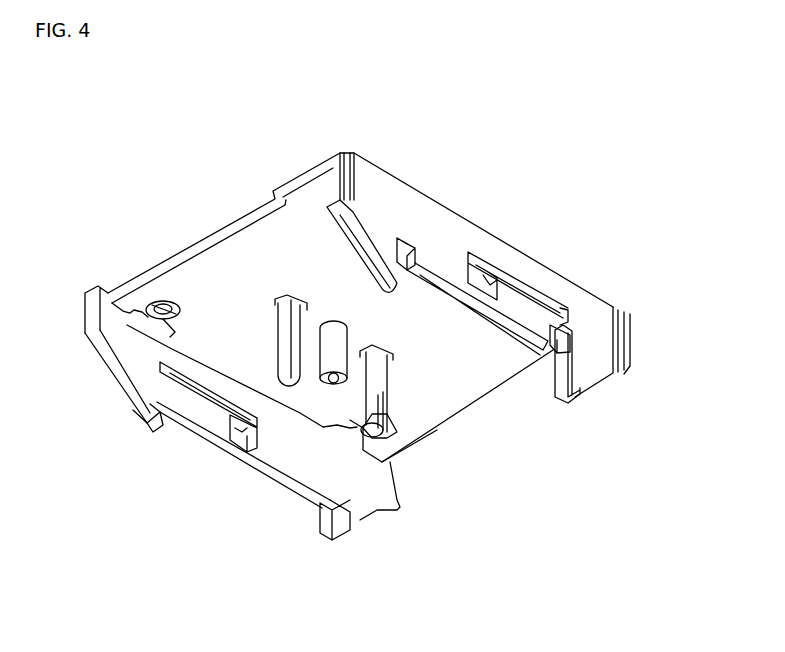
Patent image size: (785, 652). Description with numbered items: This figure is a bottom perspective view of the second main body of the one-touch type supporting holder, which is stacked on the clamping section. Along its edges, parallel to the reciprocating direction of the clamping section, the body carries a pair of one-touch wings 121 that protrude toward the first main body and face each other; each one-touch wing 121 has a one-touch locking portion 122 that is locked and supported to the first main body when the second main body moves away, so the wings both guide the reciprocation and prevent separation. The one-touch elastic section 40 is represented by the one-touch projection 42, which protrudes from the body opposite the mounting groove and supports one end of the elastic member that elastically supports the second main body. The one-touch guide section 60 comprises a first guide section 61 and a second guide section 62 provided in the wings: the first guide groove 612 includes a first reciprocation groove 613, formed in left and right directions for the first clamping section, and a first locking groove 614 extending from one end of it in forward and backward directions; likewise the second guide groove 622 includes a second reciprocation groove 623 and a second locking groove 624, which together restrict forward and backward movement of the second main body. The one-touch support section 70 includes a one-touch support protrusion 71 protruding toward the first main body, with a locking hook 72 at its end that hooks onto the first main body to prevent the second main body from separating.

The one-touch elastic section 40 is at (268, 261).
The one-touch projection 42 is at (330, 322).
The one-touch guide section 60 is at (613, 140).
The first guide section 61 is at (165, 461).
The second guide section 62 is at (546, 256).
The one-touch support section 70 is at (487, 398).
The one-touch support protrusion 71 is at (380, 373).
The locking hook 72 is at (395, 432).
The one-touch wing 121 is at (447, 225).
The one-touch locking portion 122 is at (357, 255).
The first guide groove 612 is at (165, 461).
The first reciprocation groove 613 is at (208, 405).
The first locking groove 614 is at (243, 440).
The second guide groove 622 is at (546, 256).
The second reciprocation groove 623 is at (547, 292).
The second locking groove 624 is at (487, 275).